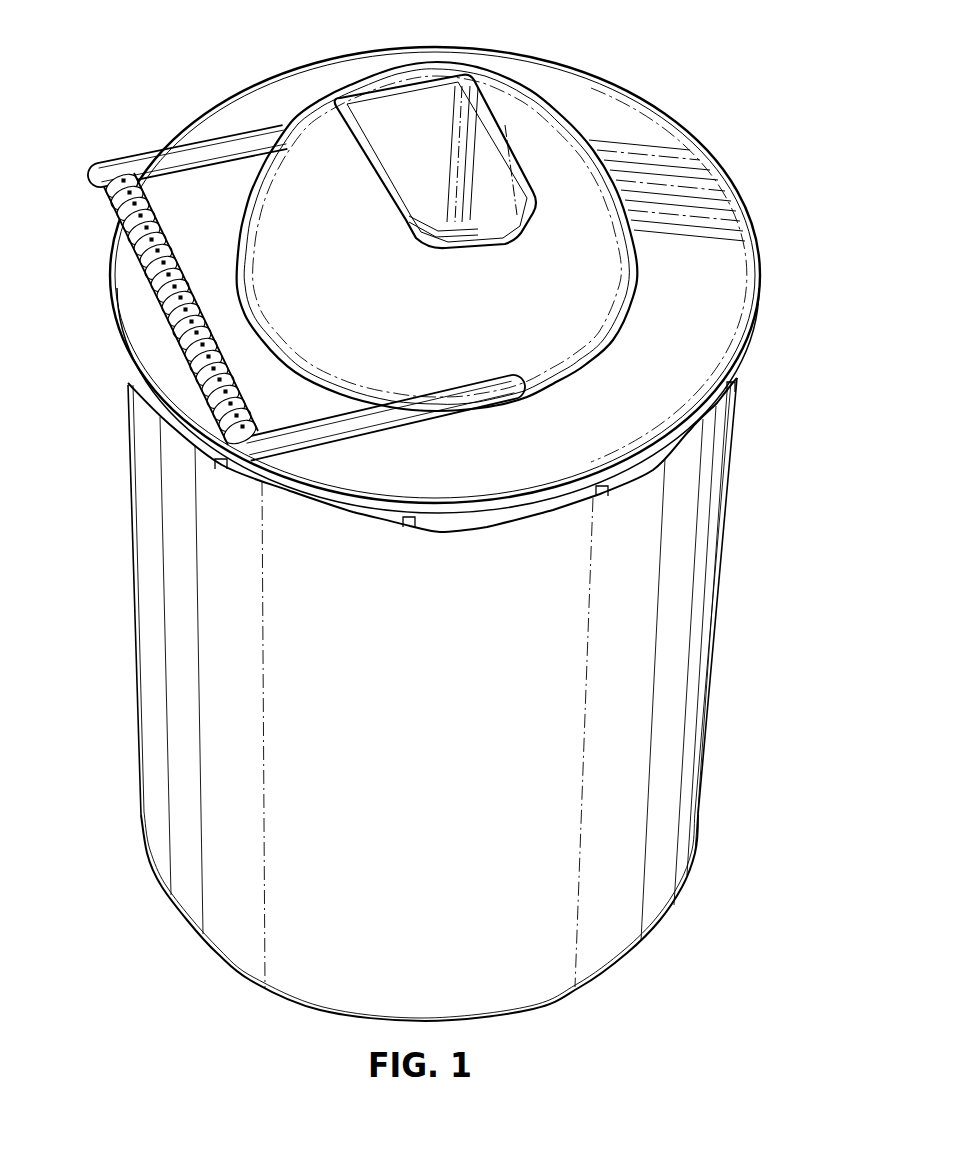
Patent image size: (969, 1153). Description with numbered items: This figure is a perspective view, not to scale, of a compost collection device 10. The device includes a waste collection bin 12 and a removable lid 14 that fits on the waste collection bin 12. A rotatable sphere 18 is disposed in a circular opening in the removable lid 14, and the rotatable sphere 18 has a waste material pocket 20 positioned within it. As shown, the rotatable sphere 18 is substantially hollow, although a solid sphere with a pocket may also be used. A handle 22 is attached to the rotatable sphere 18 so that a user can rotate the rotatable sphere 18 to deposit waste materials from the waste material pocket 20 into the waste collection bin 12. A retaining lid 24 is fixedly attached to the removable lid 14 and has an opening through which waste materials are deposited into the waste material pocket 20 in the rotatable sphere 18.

The compost collection device 10 is at (805, 84).
The waste collection bin 12 is at (665, 683).
The removable lid 14 is at (713, 317).
The rotatable sphere 18 is at (442, 53).
The waste material pocket 20 is at (394, 136).
The handle 22 is at (150, 284).
The retaining lid 24 is at (559, 130).